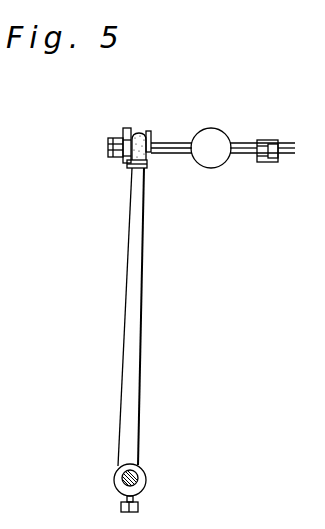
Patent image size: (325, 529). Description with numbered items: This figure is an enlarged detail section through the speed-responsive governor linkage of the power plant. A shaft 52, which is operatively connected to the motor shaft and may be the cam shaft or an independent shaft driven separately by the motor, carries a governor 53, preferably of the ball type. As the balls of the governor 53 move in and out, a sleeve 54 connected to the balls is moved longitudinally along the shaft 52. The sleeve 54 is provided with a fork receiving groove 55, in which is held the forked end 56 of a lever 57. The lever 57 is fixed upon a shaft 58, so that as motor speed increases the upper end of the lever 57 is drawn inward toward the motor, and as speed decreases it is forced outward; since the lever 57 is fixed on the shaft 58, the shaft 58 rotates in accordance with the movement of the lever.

The shaft 52 is at (288, 156).
The governor 53 is at (211, 142).
The sleeve 54 is at (147, 133).
The fork receiving groove 55 is at (131, 134).
The forked end 56 is at (128, 169).
The lever 57 is at (135, 286).
The shaft 58 is at (126, 477).